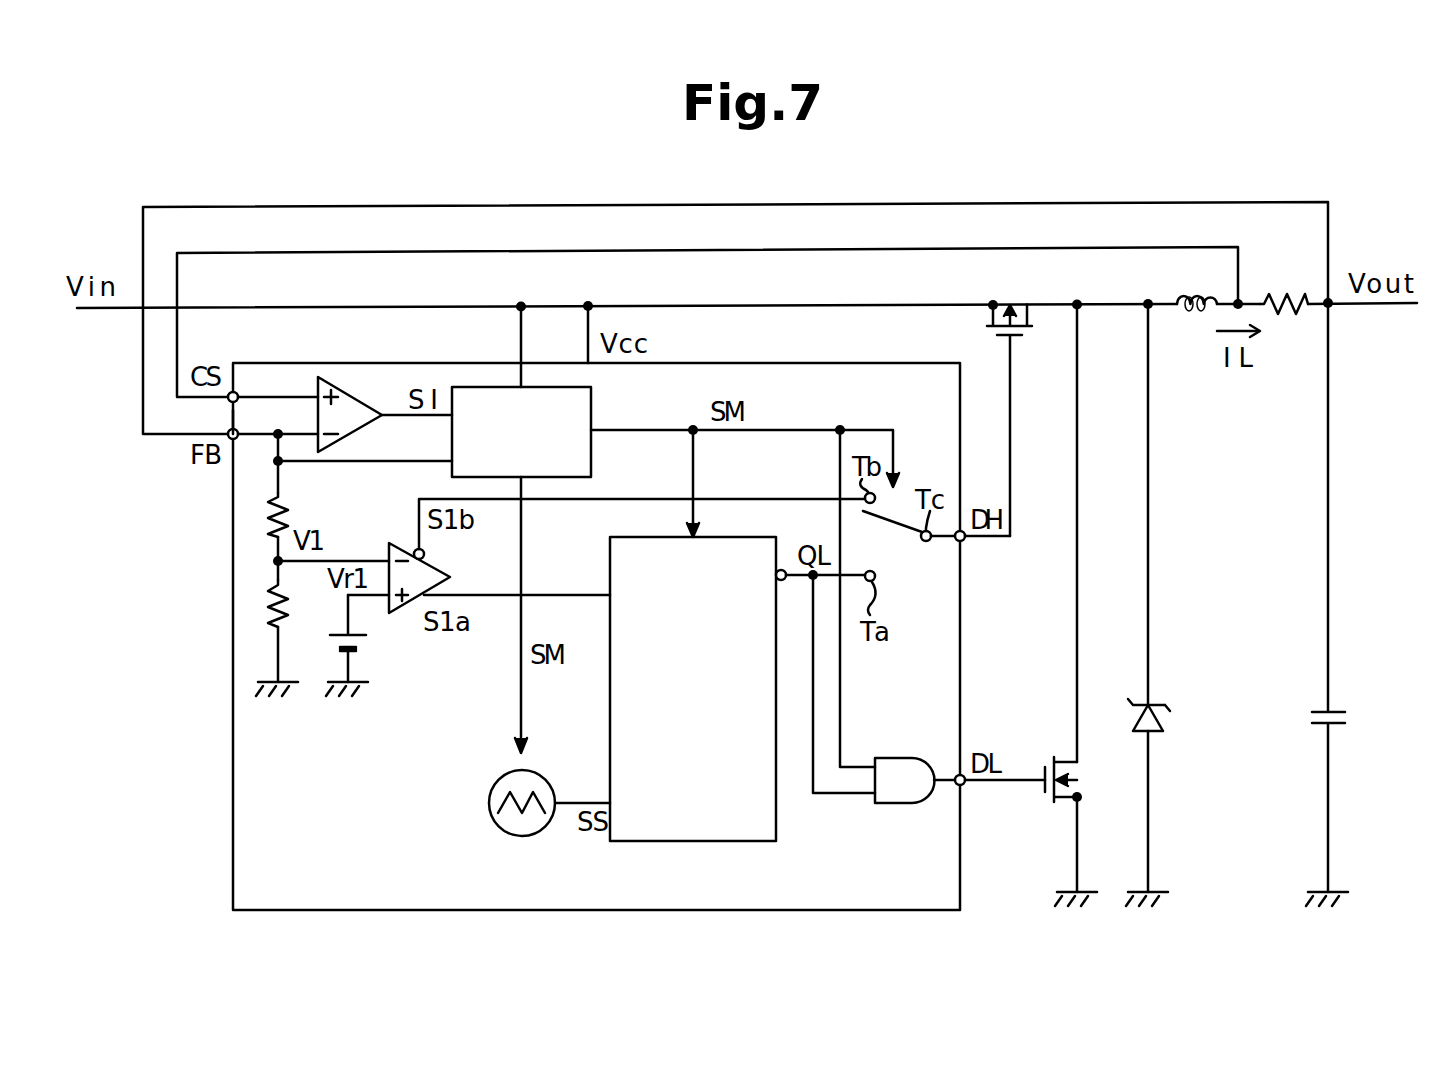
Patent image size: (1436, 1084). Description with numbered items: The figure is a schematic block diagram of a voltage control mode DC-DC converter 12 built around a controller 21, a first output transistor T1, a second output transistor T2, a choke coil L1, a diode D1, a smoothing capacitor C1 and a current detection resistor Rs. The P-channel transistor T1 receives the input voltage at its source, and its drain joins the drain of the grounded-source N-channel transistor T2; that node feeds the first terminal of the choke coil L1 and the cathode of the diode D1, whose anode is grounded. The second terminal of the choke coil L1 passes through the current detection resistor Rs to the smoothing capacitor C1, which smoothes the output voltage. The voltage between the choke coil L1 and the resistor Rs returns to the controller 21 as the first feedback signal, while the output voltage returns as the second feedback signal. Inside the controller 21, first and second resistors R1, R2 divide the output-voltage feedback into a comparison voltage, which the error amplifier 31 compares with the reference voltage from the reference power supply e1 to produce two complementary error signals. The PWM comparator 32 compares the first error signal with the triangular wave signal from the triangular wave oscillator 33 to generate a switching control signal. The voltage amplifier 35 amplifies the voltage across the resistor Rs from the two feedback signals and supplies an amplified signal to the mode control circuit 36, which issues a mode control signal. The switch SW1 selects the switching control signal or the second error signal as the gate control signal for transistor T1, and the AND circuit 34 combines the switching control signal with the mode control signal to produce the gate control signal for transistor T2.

The DC-DC converter 12 is at (1360, 191).
The controller 21 is at (868, 363).
The error amplifier 31 is at (394, 543).
The PWM comparator 32 is at (620, 537).
The triangular wave oscillator 33 is at (548, 781).
The AND circuit 34 is at (895, 758).
The voltage amplifier 35 is at (338, 390).
The mode control circuit 36 is at (593, 404).
The first output transistor T1 is at (1022, 337).
The second output transistor T2 is at (1054, 760).
The choke coil L1 is at (1188, 294).
The current detection resistor Rs is at (1285, 297).
The first resistor R1 is at (290, 506).
The second resistor R2 is at (290, 610).
The smoothing capacitor C1 is at (1312, 713).
The diode D1 is at (1160, 720).
The reference power supply e1 is at (355, 652).
The switch SW1 is at (895, 523).